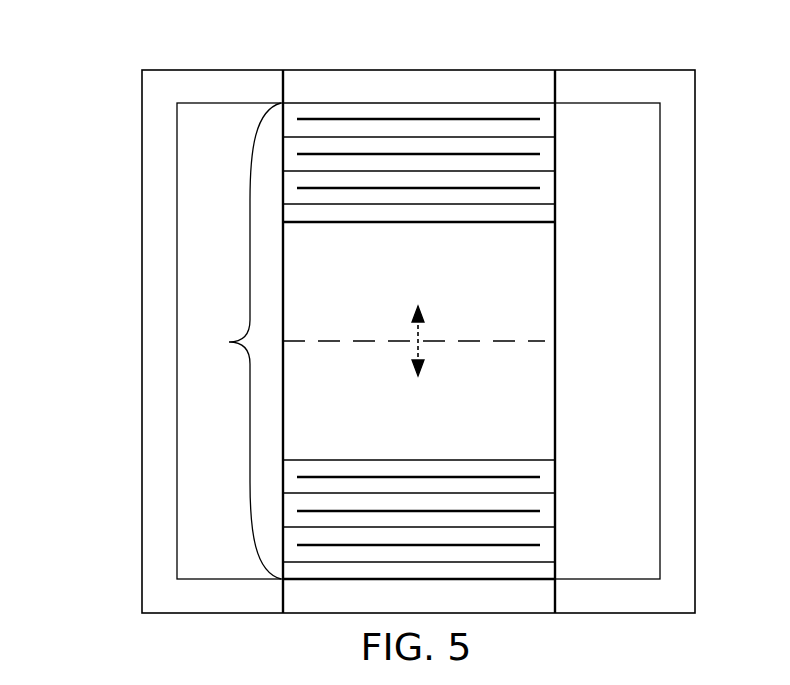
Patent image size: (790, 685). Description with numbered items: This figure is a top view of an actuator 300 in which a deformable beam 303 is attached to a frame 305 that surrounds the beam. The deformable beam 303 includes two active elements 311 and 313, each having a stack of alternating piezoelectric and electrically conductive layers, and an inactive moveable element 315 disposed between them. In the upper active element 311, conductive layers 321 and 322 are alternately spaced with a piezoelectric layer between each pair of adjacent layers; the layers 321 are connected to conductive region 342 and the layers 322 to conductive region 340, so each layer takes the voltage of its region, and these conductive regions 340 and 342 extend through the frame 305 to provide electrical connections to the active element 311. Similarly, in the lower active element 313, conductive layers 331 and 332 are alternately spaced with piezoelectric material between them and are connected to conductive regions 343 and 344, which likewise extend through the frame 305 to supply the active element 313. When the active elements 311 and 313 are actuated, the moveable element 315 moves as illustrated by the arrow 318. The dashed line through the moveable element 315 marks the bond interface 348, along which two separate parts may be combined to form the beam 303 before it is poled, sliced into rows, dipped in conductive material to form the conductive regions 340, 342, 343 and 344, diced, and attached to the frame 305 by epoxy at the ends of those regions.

The actuator 300 is at (120, 56).
The frame 305 is at (142, 342).
The deformable beam 303 is at (230, 341).
The active element 311 is at (559, 103).
The active element 313 is at (559, 460).
The inactive moveable element 315 is at (559, 222).
The arrow 318 is at (421, 337).
The conductive layers 321 is at (377, 222).
The conductive layers 322 is at (458, 204).
The conductive layers 331 is at (380, 579).
The conductive layers 332 is at (463, 562).
The conductive region 340 is at (282, 80).
The conductive region 342 is at (557, 88).
The conductive region 343 is at (282, 592).
The conductive region 344 is at (557, 600).
The bond interface 348 is at (367, 340).